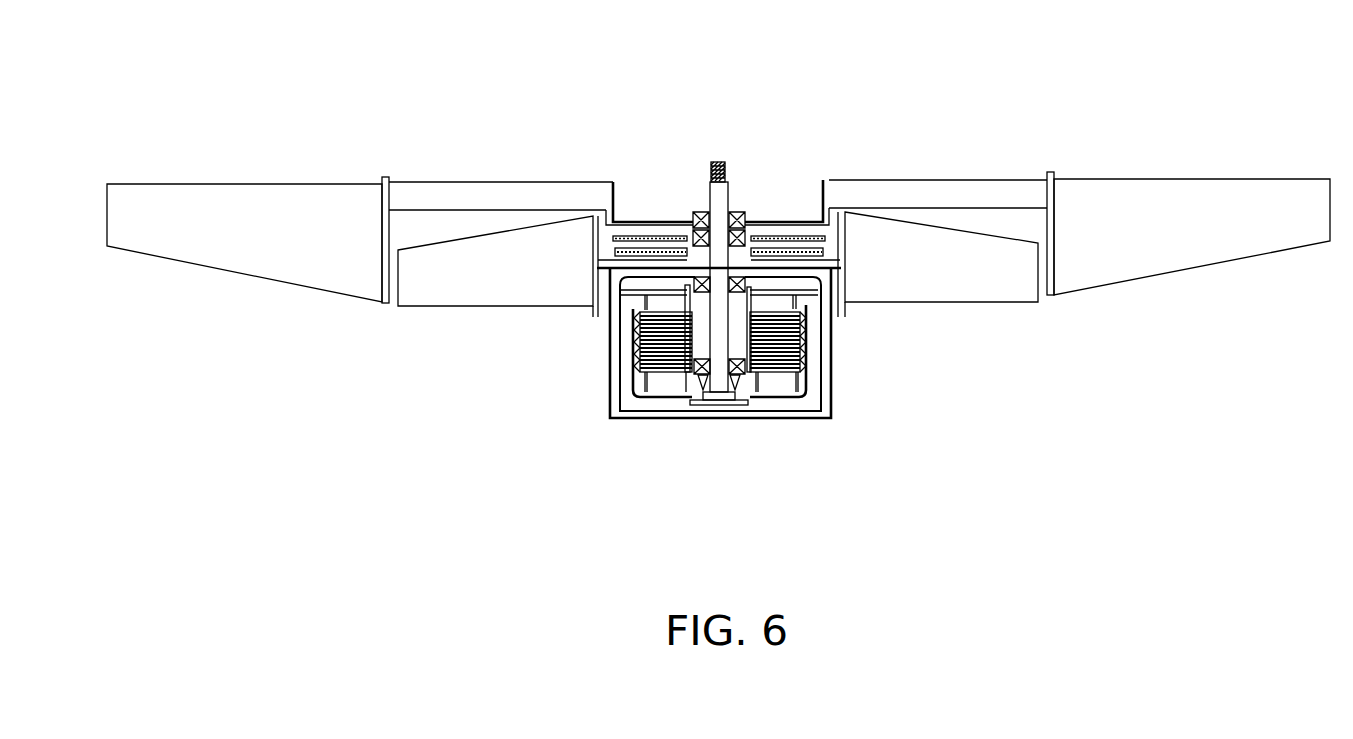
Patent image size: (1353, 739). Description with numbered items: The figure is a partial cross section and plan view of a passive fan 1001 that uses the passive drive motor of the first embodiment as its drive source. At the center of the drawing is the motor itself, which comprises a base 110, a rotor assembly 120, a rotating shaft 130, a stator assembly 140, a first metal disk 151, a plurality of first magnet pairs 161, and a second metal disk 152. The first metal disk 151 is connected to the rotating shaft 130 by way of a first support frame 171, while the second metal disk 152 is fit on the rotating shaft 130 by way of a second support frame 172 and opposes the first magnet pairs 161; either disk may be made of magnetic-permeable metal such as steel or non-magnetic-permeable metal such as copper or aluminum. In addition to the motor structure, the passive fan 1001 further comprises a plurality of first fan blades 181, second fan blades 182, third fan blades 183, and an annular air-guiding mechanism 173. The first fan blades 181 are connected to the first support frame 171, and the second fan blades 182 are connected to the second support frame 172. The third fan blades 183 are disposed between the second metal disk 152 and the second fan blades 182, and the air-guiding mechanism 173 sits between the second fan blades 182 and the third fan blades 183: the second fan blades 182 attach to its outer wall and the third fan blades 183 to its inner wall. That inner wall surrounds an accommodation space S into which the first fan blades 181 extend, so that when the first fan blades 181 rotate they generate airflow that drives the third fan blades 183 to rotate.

The passive fan 1001 is at (178, 80).
The base 110 is at (718, 400).
The rotor assembly 120 is at (632, 403).
The rotating shaft 130 is at (725, 385).
The stator assembly 140 is at (778, 373).
The first metal disk 151 is at (832, 250).
The second metal disk 152 is at (843, 237).
The first magnet pairs 161 is at (843, 245).
The first support frame 171 is at (599, 280).
The second support frame 172 is at (652, 222).
The annular air-guiding mechanism 173 is at (1050, 298).
The first fan blades 181 is at (497, 290).
The second fan blades 182 is at (252, 257).
The third fan blades 183 is at (470, 192).
The accommodation space S is at (1008, 220).